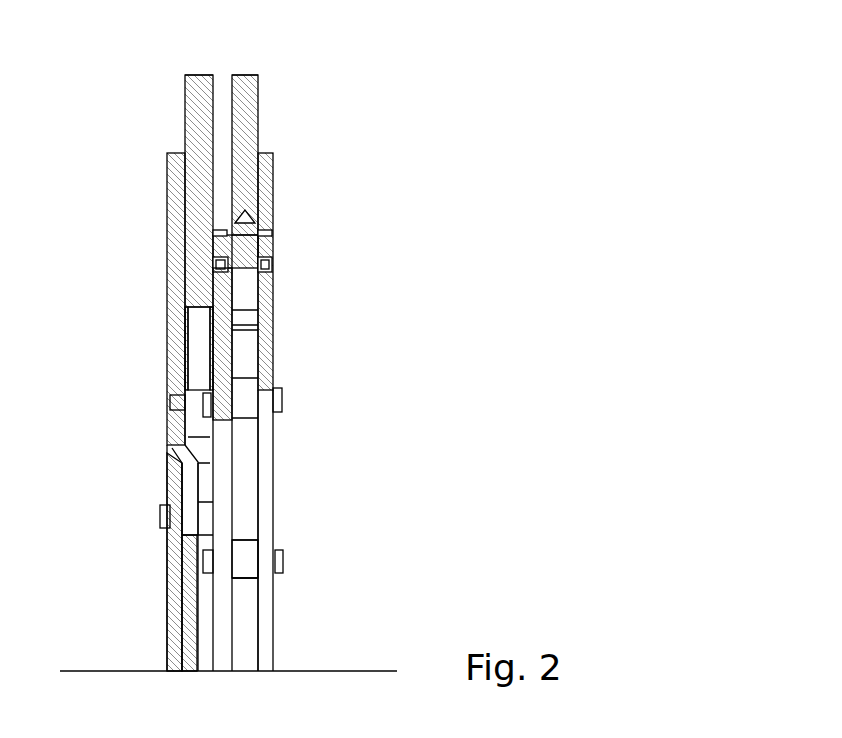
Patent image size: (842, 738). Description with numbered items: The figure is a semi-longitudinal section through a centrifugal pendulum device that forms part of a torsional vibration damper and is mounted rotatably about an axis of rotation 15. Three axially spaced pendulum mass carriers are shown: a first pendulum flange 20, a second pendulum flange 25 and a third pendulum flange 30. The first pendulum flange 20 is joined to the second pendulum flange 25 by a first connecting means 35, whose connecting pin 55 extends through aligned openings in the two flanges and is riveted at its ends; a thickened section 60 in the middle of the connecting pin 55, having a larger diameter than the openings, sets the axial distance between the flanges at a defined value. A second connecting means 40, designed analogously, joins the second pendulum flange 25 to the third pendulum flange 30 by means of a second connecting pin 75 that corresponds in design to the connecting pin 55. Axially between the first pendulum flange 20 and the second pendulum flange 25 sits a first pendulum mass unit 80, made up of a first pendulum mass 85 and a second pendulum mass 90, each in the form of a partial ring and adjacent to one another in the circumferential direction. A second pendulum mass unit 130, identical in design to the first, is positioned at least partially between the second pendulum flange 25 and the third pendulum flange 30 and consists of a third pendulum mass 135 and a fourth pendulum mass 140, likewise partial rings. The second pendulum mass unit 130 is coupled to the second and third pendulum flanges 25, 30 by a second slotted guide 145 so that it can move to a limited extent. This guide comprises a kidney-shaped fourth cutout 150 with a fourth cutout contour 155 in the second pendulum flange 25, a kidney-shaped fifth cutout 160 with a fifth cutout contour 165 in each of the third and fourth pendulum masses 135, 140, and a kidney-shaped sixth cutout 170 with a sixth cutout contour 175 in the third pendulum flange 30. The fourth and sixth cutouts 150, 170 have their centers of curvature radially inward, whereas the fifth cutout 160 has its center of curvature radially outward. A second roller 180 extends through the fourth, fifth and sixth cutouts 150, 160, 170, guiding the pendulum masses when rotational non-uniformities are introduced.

The axis of rotation 15 is at (385, 671).
The first pendulum flange 20 is at (175, 345).
The second pendulum flange 25 is at (222, 220).
The third pendulum flange 30 is at (275, 357).
The first connecting means 35 is at (160, 512).
The second connecting means 40 is at (283, 567).
The connecting pin 55 is at (188, 530).
The thickened section 60 is at (203, 575).
The second connecting pin 75 is at (247, 560).
The first pendulum mass unit 80 is at (185, 75).
The first pendulum mass 85 is at (140, 365).
The second pendulum mass 90 is at (190, 103).
The second pendulum mass unit 130 is at (258, 73).
The third pendulum mass 135 is at (326, 372).
The fourth pendulum mass 140 is at (252, 115).
The second slotted guide 145 is at (291, 321).
The fourth cutout 150 is at (214, 268).
The fourth cutout contour 155 is at (214, 262).
The fifth cutout 160 is at (248, 216).
The fifth cutout contour 165 is at (268, 224).
The sixth cutout 170 is at (270, 252).
The sixth cutout contour 175 is at (272, 262).
The second roller 180 is at (222, 245).